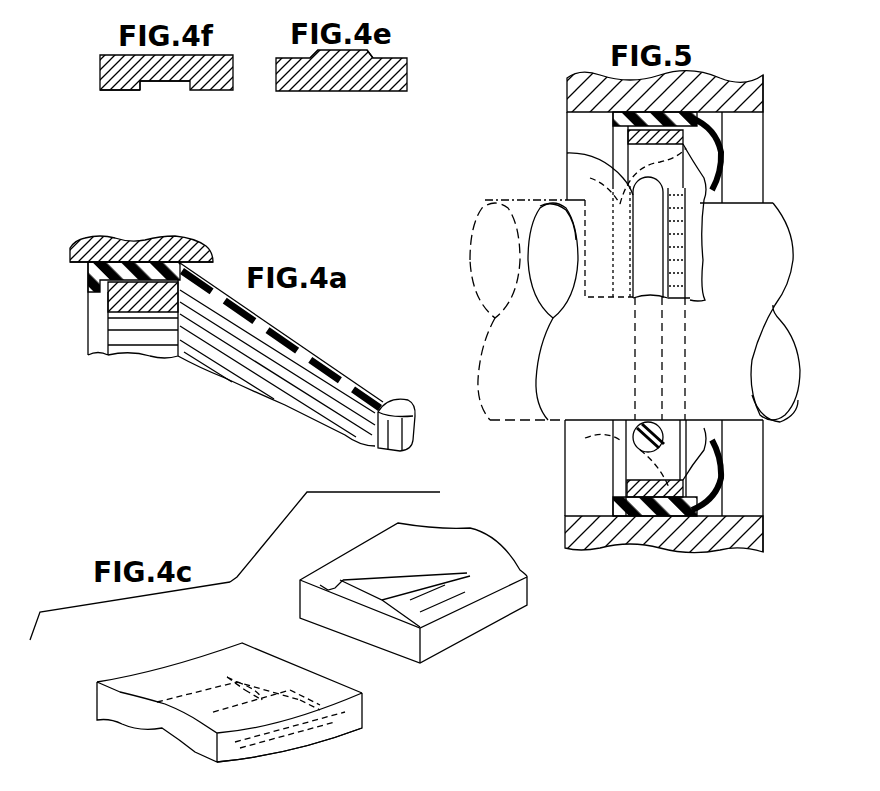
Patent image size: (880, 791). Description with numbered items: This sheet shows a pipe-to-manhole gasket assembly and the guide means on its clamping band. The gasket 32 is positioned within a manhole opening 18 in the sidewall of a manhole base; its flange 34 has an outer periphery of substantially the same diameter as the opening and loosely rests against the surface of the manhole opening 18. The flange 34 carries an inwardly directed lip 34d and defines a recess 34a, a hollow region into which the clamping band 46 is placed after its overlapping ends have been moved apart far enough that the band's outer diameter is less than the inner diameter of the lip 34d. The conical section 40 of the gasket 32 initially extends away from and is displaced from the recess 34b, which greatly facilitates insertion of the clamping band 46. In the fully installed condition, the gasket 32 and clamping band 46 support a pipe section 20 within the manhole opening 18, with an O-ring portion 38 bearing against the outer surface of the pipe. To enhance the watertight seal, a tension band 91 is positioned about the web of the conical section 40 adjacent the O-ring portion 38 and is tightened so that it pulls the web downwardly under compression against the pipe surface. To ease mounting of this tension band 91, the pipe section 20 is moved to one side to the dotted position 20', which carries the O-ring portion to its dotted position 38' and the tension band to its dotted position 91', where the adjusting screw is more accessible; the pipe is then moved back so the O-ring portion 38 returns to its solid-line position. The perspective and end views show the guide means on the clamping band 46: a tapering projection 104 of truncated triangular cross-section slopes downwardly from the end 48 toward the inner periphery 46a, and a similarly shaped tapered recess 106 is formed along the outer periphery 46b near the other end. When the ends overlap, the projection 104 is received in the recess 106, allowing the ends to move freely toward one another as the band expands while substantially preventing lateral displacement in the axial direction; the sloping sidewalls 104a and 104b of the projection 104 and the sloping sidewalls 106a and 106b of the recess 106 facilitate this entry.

In FIG. 4A, the manhole opening 18 is at (210, 258).
In FIG. 5, the manhole opening 18 is at (750, 516).
In FIG. 5, the pipe section 20 is at (670, 334).
In FIG. 5, the pipe section in displaced position 20' is at (505, 287).
In FIG. 4A, the gasket 32 is at (350, 349).
In FIG. 5, the gasket 32 is at (577, 123).
In FIG. 4A, the flange 34 is at (88, 270).
In FIG. 5, the recess 34a is at (602, 548).
In FIG. 4A, the recess 34b is at (146, 262).
In FIG. 4A, the inwardly directed lip 34d is at (98, 308).
In FIG. 5, the inwardly directed lip 34d is at (612, 476).
In FIG. 4A, the O-ring portion 38 is at (399, 403).
In FIG. 5, the O-ring portion 38 is at (600, 297).
In FIG. 5, the O-ring portion in displaced position 38' is at (601, 319).
In FIG. 4A, the conical section 40 is at (320, 362).
In FIG. 5, the conical section 40 is at (725, 148).
In FIG. 4A, the clamping band 46 is at (128, 310).
In FIG. 5, the clamping band 46 is at (627, 462).
In FIG. 4C, the clamping band 46 is at (556, 608).
In FIG. 4F, the inner periphery 46a is at (116, 58).
In FIG. 4E, the inner periphery 46a is at (400, 58).
In FIG. 4C, the inner periphery 46a is at (497, 575).
In FIG. 4F, the outer periphery 46b is at (114, 90).
In FIG. 4C, the outer periphery 46b is at (340, 748).
In FIG. 4C, the end 48 is at (407, 648).
In FIG. 5, the tension band 91 is at (719, 320).
In FIG. 5, the tension band in displaced position 91' is at (629, 303).
In FIG. 4C, the tapering projection 104 is at (390, 580).
In FIG. 4E, the sloping sidewall 104a is at (312, 52).
In FIG. 4C, the sloping sidewall 104a is at (325, 580).
In FIG. 4E, the sloping sidewall 104b is at (372, 50).
In FIG. 4C, the sloping sidewall 104b is at (430, 600).
In FIG. 4C, the tapered recess 106 is at (278, 685).
In FIG. 4F, the sloping sidewall 106a is at (184, 90).
In FIG. 4C, the sloping sidewall 106a is at (230, 678).
In FIG. 4F, the sloping sidewall 106b is at (146, 90).
In FIG. 4C, the sloping sidewall 106b is at (375, 708).